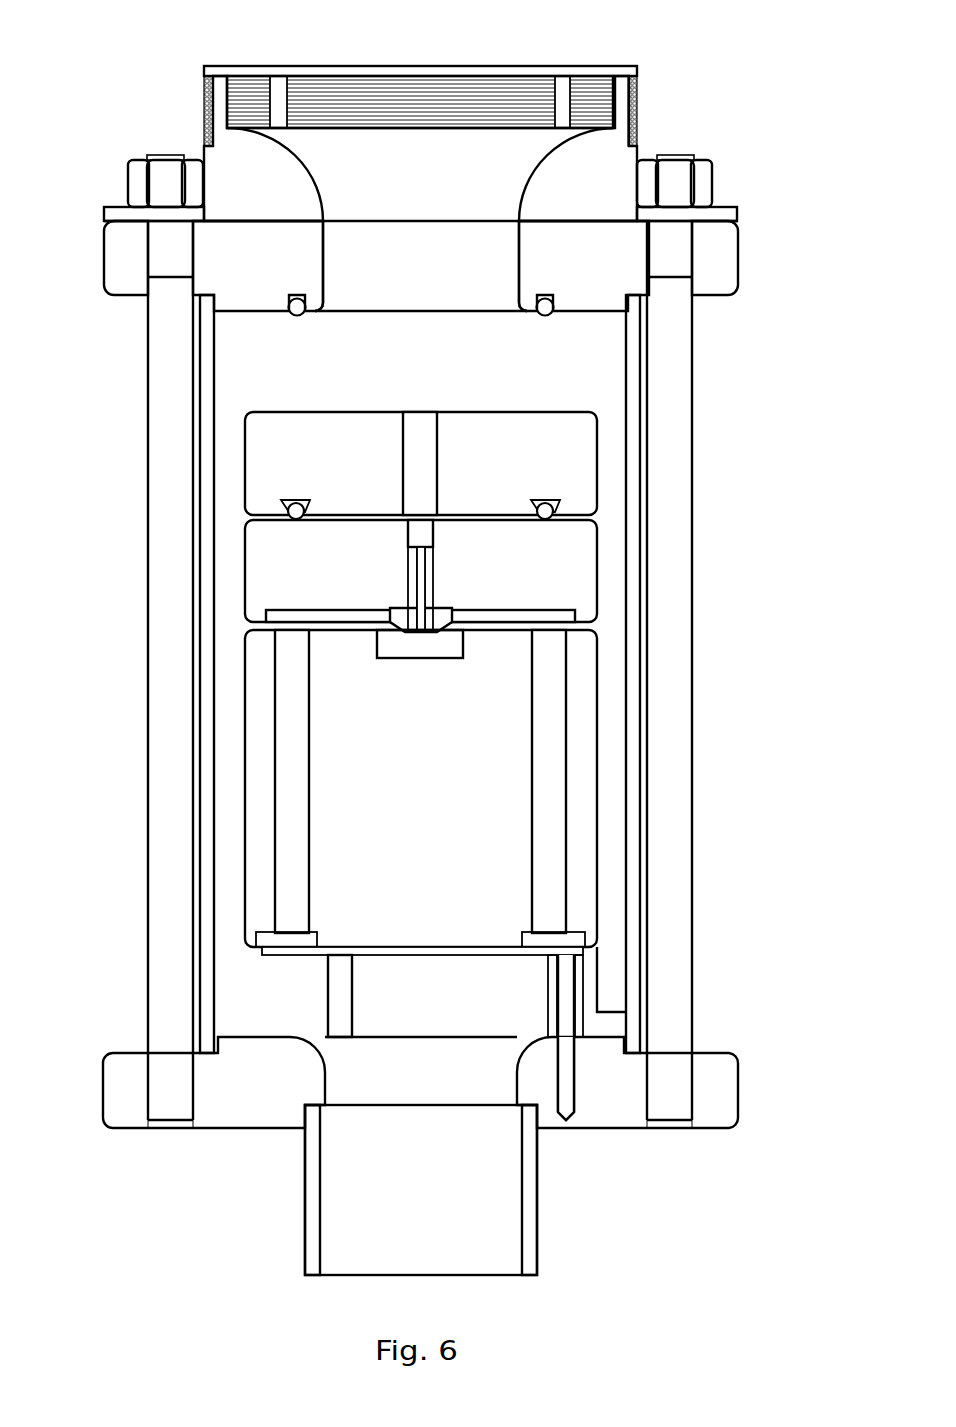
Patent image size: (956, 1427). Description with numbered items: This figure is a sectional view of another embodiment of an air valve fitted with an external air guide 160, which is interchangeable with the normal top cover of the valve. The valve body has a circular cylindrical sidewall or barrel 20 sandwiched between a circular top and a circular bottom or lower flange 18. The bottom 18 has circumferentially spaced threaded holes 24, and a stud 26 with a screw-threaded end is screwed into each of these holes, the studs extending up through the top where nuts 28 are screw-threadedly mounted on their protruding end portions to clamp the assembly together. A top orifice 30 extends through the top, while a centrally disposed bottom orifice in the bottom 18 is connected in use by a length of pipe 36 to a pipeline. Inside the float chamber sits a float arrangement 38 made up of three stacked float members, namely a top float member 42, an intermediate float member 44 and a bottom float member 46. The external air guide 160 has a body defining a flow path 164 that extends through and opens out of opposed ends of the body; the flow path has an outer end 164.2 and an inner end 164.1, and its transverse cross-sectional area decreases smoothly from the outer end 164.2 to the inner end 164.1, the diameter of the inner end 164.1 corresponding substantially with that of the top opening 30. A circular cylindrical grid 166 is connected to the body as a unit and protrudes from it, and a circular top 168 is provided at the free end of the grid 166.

The external air guide 160 is at (168, 52).
The circular top 168 is at (320, 66).
The circular cylindrical grid 166 is at (636, 113).
The flow path 164 is at (462, 148).
The outer end diameter 164.2 is at (333, 128).
The inner end diameter 164.1 is at (438, 225).
The top orifice 30 is at (380, 290).
The nuts 28 is at (158, 179).
The stud 26 is at (148, 711).
The sidewall 20 is at (630, 633).
The top float member 42 is at (597, 462).
The intermediate float member 44 is at (245, 568).
The bottom float member 46 is at (597, 719).
The float arrangement 38 is at (618, 568).
The lower flange 18 is at (738, 1090).
The threaded holes 24 is at (163, 1097).
The pipe 36 is at (537, 1190).